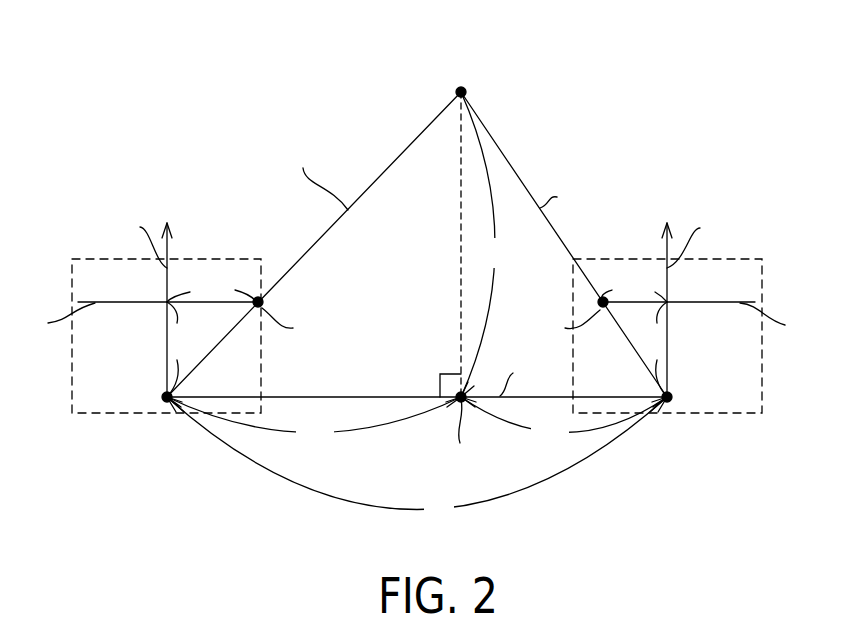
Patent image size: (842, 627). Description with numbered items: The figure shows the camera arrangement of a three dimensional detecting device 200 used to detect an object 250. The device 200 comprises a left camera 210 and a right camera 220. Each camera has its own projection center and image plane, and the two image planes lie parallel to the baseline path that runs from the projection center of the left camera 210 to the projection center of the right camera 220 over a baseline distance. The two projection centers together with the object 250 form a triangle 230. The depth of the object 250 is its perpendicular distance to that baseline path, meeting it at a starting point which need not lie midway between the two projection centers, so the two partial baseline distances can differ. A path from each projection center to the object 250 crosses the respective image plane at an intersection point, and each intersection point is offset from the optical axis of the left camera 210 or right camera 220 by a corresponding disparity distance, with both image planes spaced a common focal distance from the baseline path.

The three dimensional detecting device 200 is at (609, 97).
The left camera 210 is at (108, 415).
The right camera 220 is at (727, 415).
The triangle 230 is at (360, 300).
The object 250 is at (463, 90).